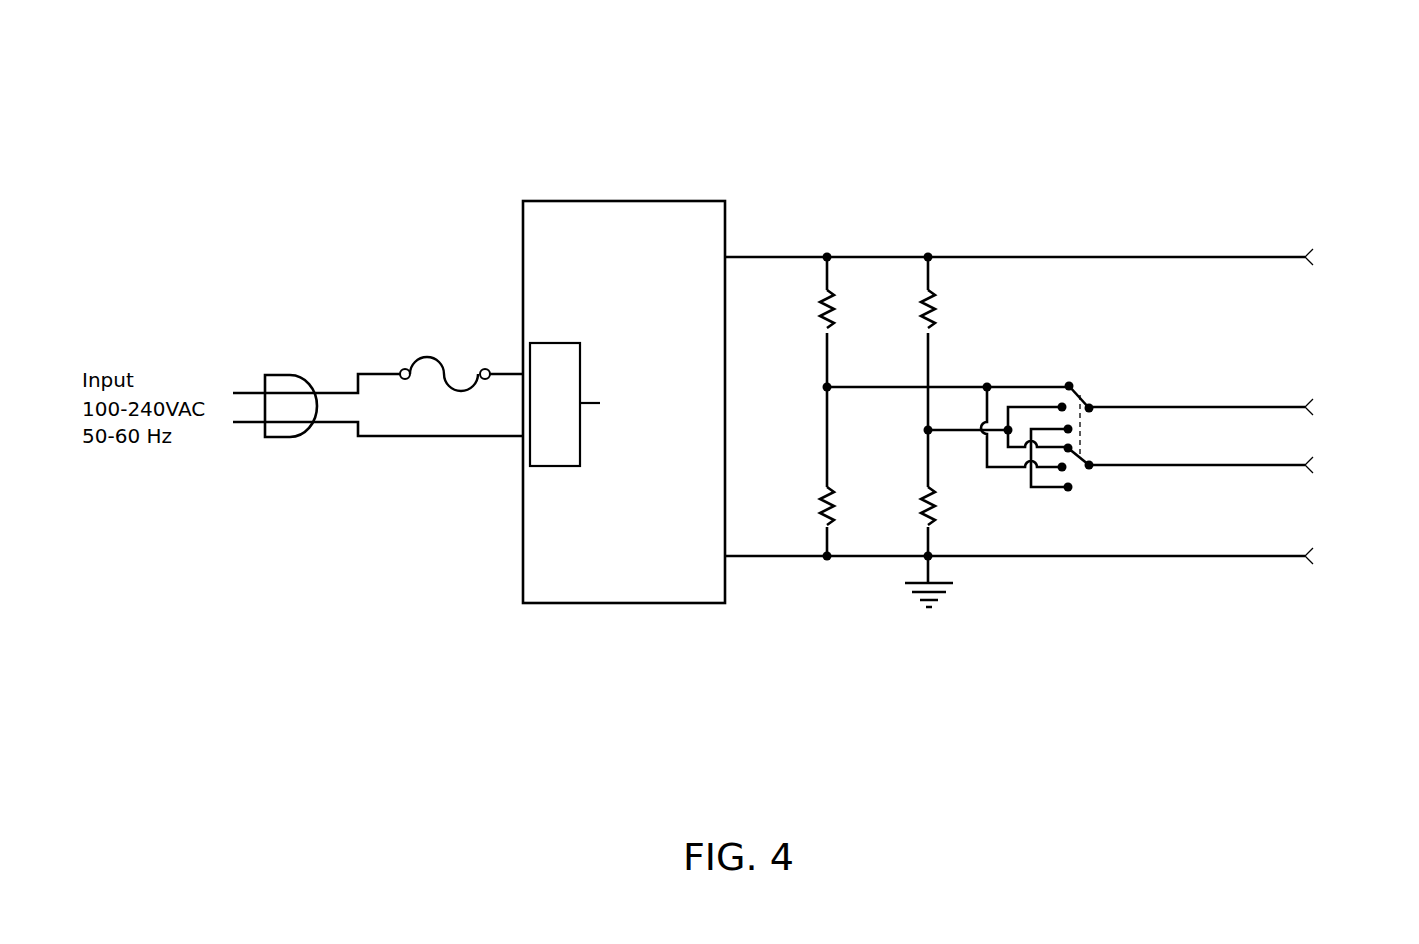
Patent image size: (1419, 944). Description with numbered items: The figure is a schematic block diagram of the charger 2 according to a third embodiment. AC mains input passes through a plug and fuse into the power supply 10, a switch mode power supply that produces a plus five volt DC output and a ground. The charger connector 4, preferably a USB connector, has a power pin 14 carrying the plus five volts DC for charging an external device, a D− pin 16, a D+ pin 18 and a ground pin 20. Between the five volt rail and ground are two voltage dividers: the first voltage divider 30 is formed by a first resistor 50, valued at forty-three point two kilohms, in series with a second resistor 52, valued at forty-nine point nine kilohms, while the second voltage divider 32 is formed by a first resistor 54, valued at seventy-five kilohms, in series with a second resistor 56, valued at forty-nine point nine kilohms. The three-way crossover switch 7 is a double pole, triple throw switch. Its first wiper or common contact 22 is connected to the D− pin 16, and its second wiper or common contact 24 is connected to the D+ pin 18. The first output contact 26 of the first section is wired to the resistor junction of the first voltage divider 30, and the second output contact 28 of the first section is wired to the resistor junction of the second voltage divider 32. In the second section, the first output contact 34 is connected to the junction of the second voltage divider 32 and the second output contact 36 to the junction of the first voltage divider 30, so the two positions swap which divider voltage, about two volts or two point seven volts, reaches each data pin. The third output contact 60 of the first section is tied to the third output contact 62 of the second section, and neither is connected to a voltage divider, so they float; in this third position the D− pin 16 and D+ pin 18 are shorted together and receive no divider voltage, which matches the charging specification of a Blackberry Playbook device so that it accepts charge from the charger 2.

The charger 2 is at (385, 193).
The connector 4 is at (1335, 333).
The three-way crossover switch 7 is at (1036, 335).
The power supply 10 is at (622, 115).
The power pin 14 is at (1313, 259).
The D− pin 16 is at (1313, 409).
The D+ pin 18 is at (1313, 467).
The ground pin 20 is at (1313, 558).
The first wiper or common contact 22 is at (1095, 405).
The second wiper or common contact 24 is at (1095, 467).
The first output contact of the first section 26 is at (1080, 388).
The second output contact of the first section 28 is at (1058, 404).
The first voltage divider 30 is at (805, 388).
The second voltage divider 32 is at (913, 403).
The first output contact of the second section 34 is at (1078, 448).
The second output contact of the second section 36 is at (1066, 470).
The first resistor 50 is at (825, 306).
The second resistor 52 is at (825, 490).
The first resistor 54 is at (930, 291).
The second resistor 56 is at (930, 488).
The third output contact of the first section 60 is at (1076, 429).
The third output contact of the second section 62 is at (1065, 490).